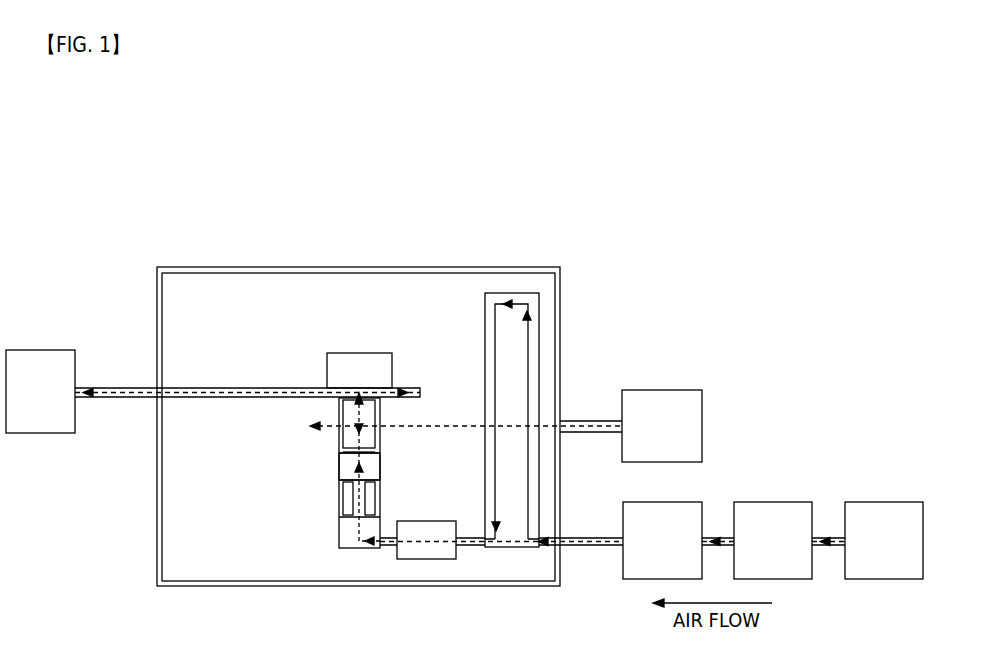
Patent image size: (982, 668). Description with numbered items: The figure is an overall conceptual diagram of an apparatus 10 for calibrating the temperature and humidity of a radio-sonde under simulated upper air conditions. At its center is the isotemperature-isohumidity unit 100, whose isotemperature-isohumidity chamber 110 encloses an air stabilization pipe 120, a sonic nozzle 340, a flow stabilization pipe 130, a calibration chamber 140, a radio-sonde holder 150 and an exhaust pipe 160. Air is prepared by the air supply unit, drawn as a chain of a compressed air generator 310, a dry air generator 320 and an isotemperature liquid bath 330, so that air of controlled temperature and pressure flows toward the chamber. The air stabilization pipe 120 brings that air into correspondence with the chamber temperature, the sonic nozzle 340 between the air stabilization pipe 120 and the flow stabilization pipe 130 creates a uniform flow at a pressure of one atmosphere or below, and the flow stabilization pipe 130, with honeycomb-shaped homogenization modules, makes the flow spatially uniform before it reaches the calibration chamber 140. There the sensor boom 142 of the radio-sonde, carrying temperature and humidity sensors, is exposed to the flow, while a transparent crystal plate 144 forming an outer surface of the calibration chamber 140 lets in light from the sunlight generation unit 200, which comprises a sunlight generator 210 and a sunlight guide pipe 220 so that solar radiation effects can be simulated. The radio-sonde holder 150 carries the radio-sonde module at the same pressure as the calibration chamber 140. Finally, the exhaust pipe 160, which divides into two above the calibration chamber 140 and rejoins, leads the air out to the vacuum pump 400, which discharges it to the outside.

The apparatus for radio-sonde temperature and humidity calibration 10 is at (213, 177).
The isotemperature-isohumidity unit 100 is at (436, 254).
The isotemperature-isohumidity chamber 110 is at (340, 267).
The air stabilization pipe 120 is at (510, 293).
The flow stabilization pipe 130 is at (339, 498).
The calibration chamber 140 is at (338, 403).
The sensor boom 142 is at (378, 410).
The crystal plate 144 is at (339, 435).
The radio-sonde holder 150 is at (339, 450).
The exhaust pipe 160 is at (266, 387).
The sunlight generation unit 200 is at (672, 340).
The sunlight generator 210 is at (660, 390).
The sunlight guide pipe 220 is at (587, 421).
The compressed air generator 310 is at (893, 580).
The dry air generator 320 is at (790, 580).
The isotemperature liquid bath 330 is at (640, 580).
The sonic nozzle 340 is at (422, 560).
The vacuum pump 400 is at (40, 350).